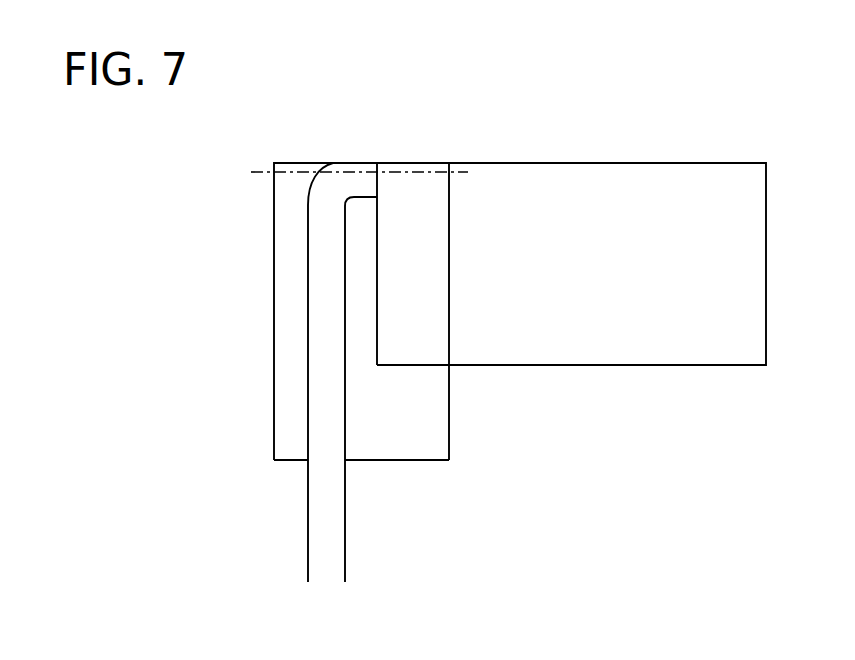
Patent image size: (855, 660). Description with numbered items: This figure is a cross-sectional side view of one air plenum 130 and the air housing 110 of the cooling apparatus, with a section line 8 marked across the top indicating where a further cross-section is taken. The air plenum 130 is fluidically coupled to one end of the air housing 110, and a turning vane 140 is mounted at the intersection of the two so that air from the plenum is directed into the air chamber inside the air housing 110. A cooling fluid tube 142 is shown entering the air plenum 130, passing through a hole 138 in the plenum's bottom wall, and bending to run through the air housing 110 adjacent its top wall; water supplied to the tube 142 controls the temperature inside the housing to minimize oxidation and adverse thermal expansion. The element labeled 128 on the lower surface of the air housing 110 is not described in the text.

The section line 8- 8 is at (253, 172).
The air housing 110 is at (636, 163).
The bottom surface of substrate 128 is at (660, 352).
The air plenum 130 is at (273, 255).
The holes 138 is at (306, 461).
The turning vanes 140 is at (429, 337).
The cooling fluid tubes 142 is at (320, 332).